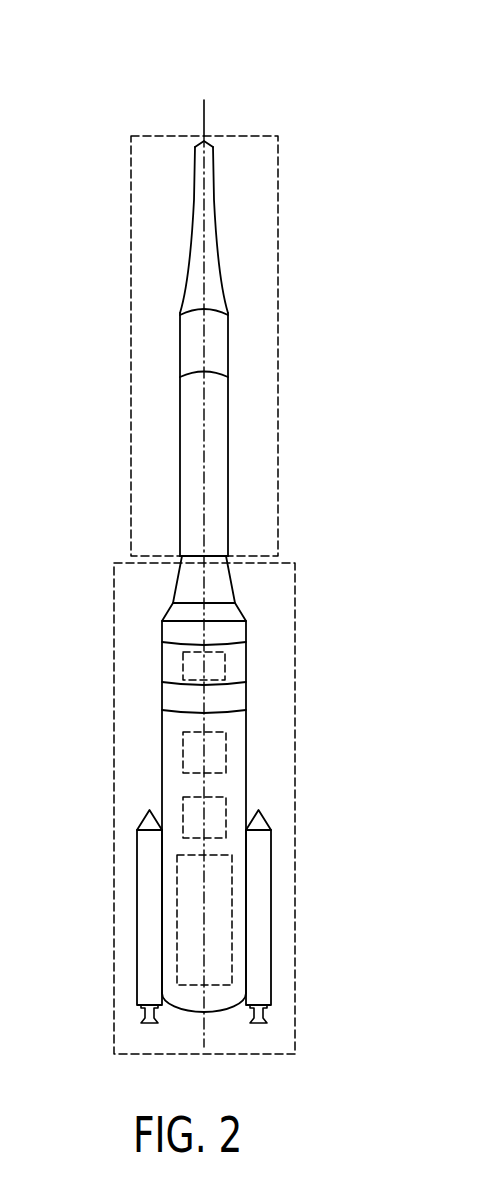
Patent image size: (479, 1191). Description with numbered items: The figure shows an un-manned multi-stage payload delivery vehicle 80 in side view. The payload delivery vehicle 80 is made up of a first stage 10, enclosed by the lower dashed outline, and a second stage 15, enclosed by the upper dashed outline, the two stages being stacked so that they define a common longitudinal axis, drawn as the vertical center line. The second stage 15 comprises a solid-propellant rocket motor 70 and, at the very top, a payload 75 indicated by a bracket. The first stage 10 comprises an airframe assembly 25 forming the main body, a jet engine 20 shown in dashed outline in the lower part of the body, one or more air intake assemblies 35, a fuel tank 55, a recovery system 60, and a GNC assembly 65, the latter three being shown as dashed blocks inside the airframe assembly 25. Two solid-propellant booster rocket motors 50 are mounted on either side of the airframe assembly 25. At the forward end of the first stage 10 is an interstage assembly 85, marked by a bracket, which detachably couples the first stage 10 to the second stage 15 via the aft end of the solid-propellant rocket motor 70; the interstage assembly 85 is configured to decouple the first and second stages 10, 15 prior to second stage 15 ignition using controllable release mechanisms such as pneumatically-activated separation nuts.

The payload delivery vehicle 80 is at (85, 80).
The second stage 15 is at (128, 442).
The first stage 10 is at (112, 676).
The payload 75 is at (232, 144).
The solid-propellant rocket motor 70 is at (216, 448).
The interstage assembly 85 is at (158, 572).
The fuel tank 55 is at (196, 679).
The air intake assembly 35 is at (230, 700).
The airframe assembly 25 is at (246, 787).
The GNC assembly 65 is at (196, 765).
The recovery system 60 is at (196, 830).
The jet engine 20 is at (196, 931).
The solid-propellant booster rocket motor 50 is at (148, 966).